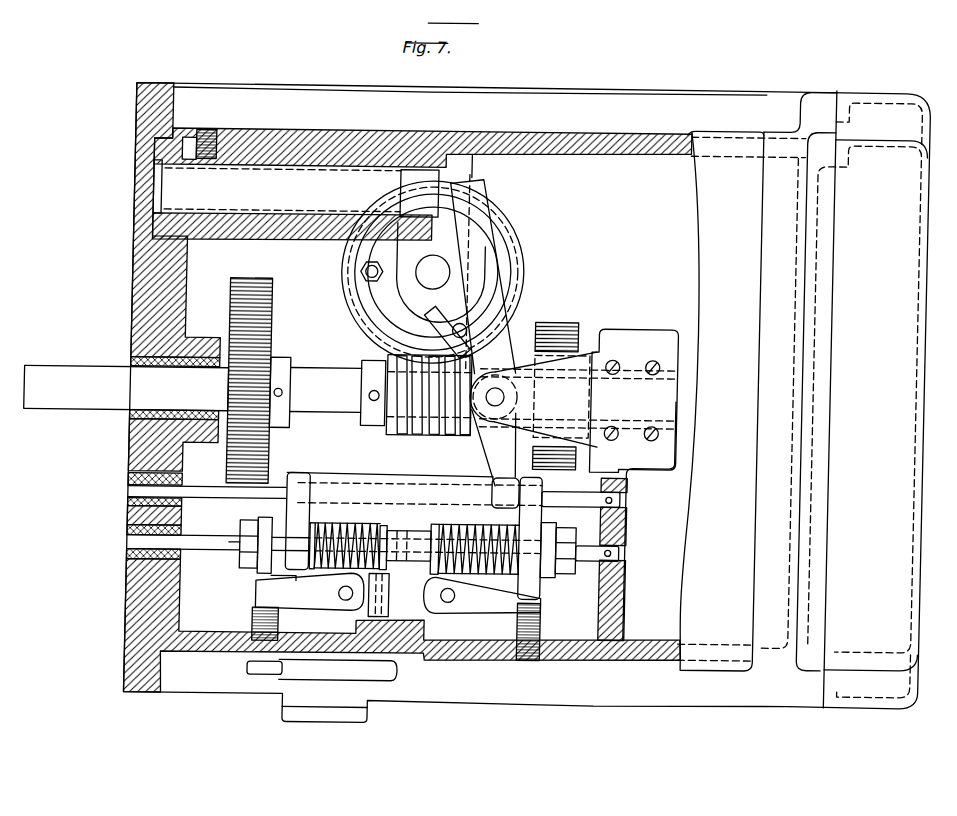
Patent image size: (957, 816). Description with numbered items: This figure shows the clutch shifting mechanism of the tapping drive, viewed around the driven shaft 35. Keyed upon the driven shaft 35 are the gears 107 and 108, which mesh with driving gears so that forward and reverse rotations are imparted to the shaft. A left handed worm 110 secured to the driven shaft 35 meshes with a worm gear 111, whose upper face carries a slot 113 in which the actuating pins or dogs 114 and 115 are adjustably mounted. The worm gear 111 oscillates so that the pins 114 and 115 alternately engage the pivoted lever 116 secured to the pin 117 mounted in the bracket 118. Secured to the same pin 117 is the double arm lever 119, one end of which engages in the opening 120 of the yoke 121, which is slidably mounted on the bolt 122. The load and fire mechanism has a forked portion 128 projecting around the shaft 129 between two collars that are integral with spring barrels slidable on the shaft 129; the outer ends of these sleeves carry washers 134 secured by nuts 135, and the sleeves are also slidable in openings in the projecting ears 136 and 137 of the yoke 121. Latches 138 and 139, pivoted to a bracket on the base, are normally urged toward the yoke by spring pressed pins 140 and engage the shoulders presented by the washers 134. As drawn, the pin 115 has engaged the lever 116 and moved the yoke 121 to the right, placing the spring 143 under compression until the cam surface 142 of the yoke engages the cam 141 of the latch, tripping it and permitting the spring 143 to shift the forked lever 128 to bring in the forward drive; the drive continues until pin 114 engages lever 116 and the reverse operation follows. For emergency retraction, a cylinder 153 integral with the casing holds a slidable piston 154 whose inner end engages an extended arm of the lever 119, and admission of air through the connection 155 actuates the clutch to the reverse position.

The driven shaft 35 is at (126, 387).
The gear 107 is at (266, 281).
The gear 108 is at (565, 316).
The worm 110 is at (418, 436).
The worm gear 111 is at (371, 324).
The slot 113 is at (375, 300).
The actuating pin 114 is at (358, 277).
The actuating pin 115 is at (437, 290).
The pivoted lever 116 is at (441, 331).
The pin 117 is at (504, 397).
The bracket 118 is at (633, 401).
The double arm lever 119 is at (497, 456).
The opening 120 is at (525, 500).
The yoke 121 is at (304, 476).
The bolt 122 is at (132, 496).
The forked portion 128 is at (407, 534).
The shaft 129 is at (140, 546).
The washers 134 is at (267, 573).
The nuts 135 is at (252, 570).
The projecting ear 136 is at (294, 530).
The projecting ear 137 is at (531, 535).
The latch 138 is at (483, 603).
The latch 139 is at (317, 600).
The spring pressed pins 140 is at (258, 614).
The cam surface 141 is at (304, 579).
The cam surface 142 is at (300, 528).
The spring 143 is at (353, 531).
The cylinder 153 is at (340, 150).
The piston 154 is at (296, 188).
The connection 155 is at (211, 141).